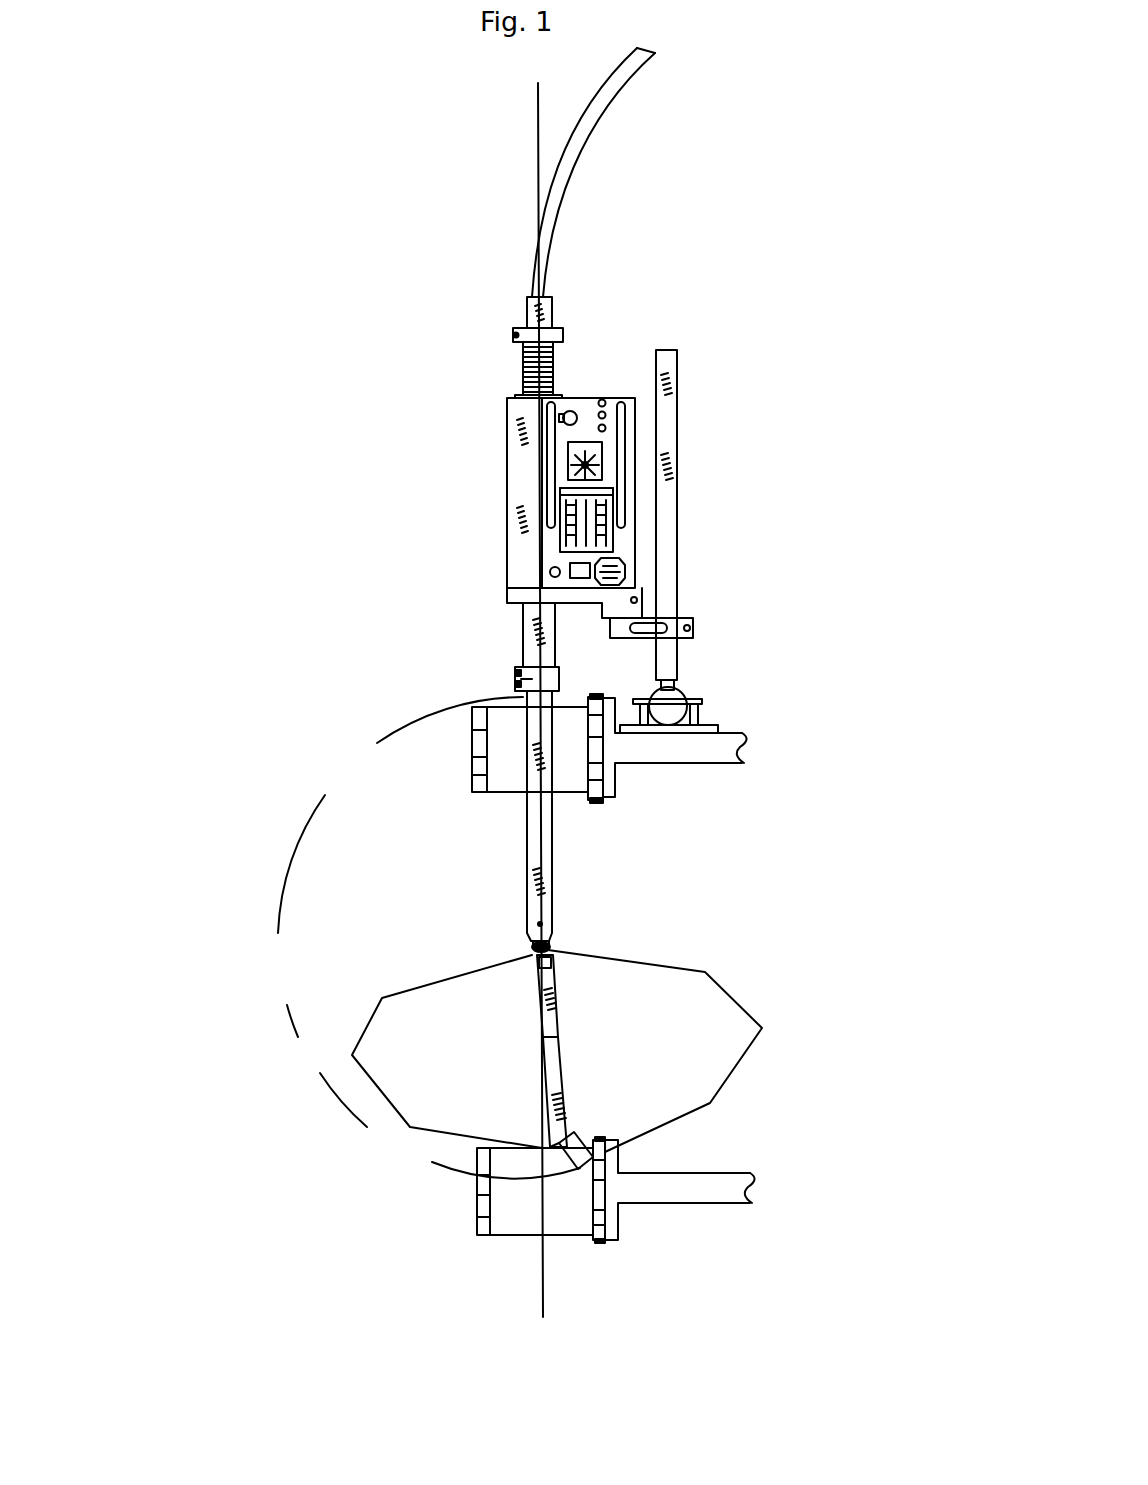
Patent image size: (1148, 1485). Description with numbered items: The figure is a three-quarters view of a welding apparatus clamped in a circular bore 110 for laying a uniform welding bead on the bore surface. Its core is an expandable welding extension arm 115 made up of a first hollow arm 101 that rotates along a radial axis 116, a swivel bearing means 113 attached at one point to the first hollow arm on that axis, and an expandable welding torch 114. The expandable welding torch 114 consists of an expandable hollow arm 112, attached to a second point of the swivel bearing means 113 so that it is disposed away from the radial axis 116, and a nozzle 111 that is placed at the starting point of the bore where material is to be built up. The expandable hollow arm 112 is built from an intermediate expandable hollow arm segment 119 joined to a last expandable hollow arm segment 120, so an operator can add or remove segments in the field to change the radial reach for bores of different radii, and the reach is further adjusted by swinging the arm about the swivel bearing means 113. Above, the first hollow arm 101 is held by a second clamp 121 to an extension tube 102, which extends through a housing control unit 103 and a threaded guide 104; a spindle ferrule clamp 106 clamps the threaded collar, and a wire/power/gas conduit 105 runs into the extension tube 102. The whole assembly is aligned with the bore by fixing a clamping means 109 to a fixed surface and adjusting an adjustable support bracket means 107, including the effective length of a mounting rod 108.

The first hollow arm 101 is at (525, 830).
The extension tube 102 is at (554, 307).
The housing control unit 103 is at (505, 490).
The threaded guide 104 is at (521, 367).
The wire/power/gas conduit 105 is at (573, 175).
The spindle ferrule clamp 106 is at (564, 335).
The adjustable support bracket means 107 is at (673, 383).
The mounting rod 108 is at (680, 660).
The clamping means 109 is at (702, 707).
The circular bore 110 is at (593, 1210).
The nozzle 111 is at (567, 1163).
The expandable hollow arm 112 is at (439, 1110).
The swivel bearing means 113 is at (529, 945).
The expandable welding torch 114 is at (585, 1051).
The expandable welding extension arm 115 is at (285, 970).
The radial axis 116 is at (537, 100).
The intermediate expandable hollow arm segment 119 is at (540, 1007).
The last expandable hollow arm segment 120 is at (548, 1080).
The second clamp 121 is at (513, 680).